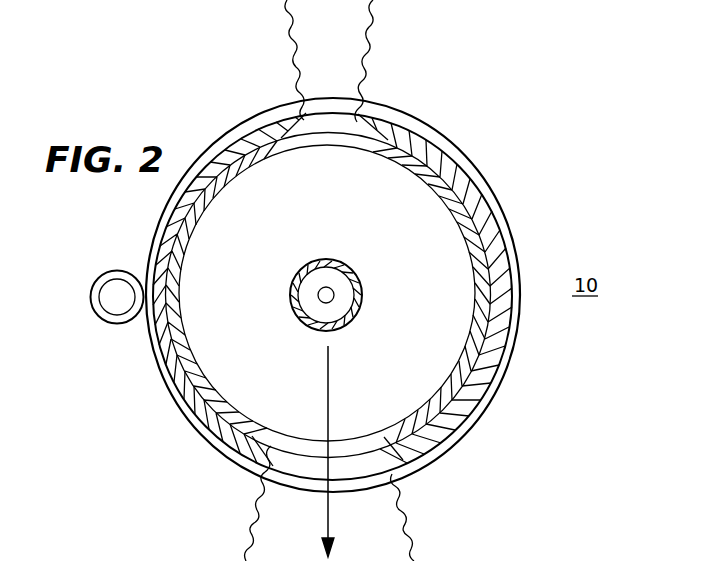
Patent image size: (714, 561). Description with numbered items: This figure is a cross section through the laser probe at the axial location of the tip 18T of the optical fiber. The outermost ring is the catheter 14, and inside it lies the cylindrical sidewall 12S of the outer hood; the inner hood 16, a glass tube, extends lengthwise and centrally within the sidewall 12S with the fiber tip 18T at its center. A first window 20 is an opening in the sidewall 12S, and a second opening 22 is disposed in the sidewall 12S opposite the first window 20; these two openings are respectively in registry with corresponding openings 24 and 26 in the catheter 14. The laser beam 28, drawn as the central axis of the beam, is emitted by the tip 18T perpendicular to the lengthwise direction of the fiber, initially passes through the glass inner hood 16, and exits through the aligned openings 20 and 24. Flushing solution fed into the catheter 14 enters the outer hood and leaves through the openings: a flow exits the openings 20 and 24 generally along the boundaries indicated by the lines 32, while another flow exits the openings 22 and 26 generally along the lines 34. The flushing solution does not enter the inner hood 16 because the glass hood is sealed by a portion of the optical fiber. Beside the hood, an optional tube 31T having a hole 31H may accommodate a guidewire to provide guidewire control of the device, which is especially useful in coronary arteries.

The cylindrical sidewall 12S is at (468, 262).
The catheter 14 is at (481, 194).
The inner hood 16 is at (339, 262).
The tip 18T is at (336, 296).
The first window 20 is at (383, 446).
The second opening 22 is at (303, 144).
The opening 24 is at (270, 452).
The opening 26 is at (362, 111).
The laser beam 28 is at (326, 377).
The hole 31H is at (128, 273).
The tube 31T is at (121, 322).
The lines 32 is at (246, 522).
The lines 34 is at (301, 90).